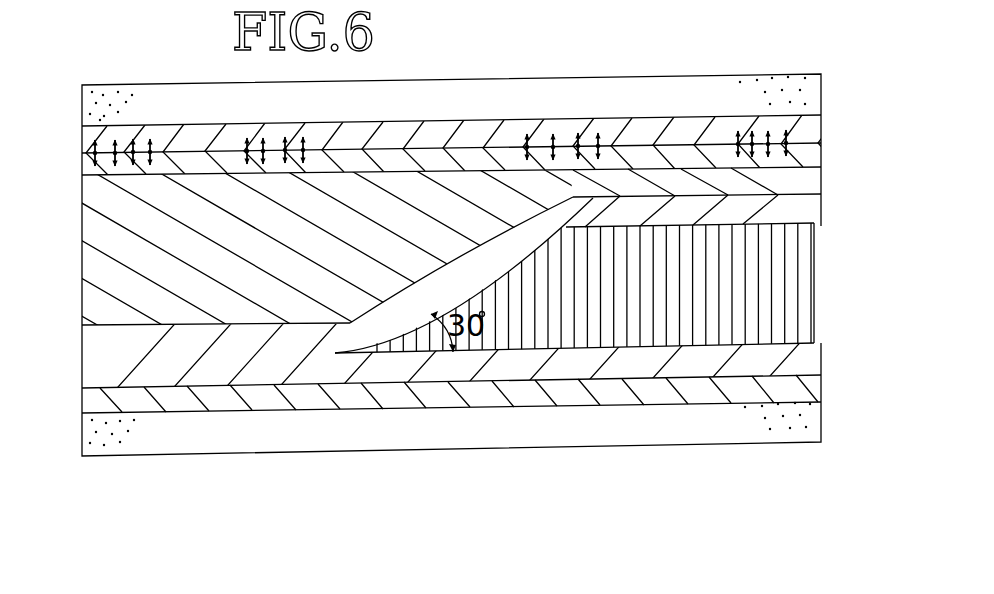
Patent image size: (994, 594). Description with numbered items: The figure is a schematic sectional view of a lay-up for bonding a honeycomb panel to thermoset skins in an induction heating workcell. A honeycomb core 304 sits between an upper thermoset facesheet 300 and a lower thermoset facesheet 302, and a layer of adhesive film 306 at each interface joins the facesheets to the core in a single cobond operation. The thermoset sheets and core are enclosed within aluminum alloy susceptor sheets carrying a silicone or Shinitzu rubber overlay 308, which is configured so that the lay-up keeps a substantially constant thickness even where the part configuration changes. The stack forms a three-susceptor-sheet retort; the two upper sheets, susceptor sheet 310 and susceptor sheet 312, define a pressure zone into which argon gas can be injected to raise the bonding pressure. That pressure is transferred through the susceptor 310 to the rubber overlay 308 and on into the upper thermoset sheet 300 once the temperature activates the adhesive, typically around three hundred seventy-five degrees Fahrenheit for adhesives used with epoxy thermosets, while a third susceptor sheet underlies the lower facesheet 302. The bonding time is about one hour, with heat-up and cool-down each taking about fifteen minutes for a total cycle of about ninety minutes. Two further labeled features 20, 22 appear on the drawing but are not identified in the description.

The display assembly 20 is at (697, 65).
The bottom substrate 22 is at (231, 470).
The thermoset facesheet 300 is at (823, 221).
The thermoset facesheet 302 is at (823, 375).
The honeycomb core 304 is at (820, 293).
The adhesive film 306 is at (821, 226).
The rubber overlay 308 is at (81, 255).
The susceptor sheet 310 is at (823, 153).
The susceptor sheet 312 is at (823, 126).